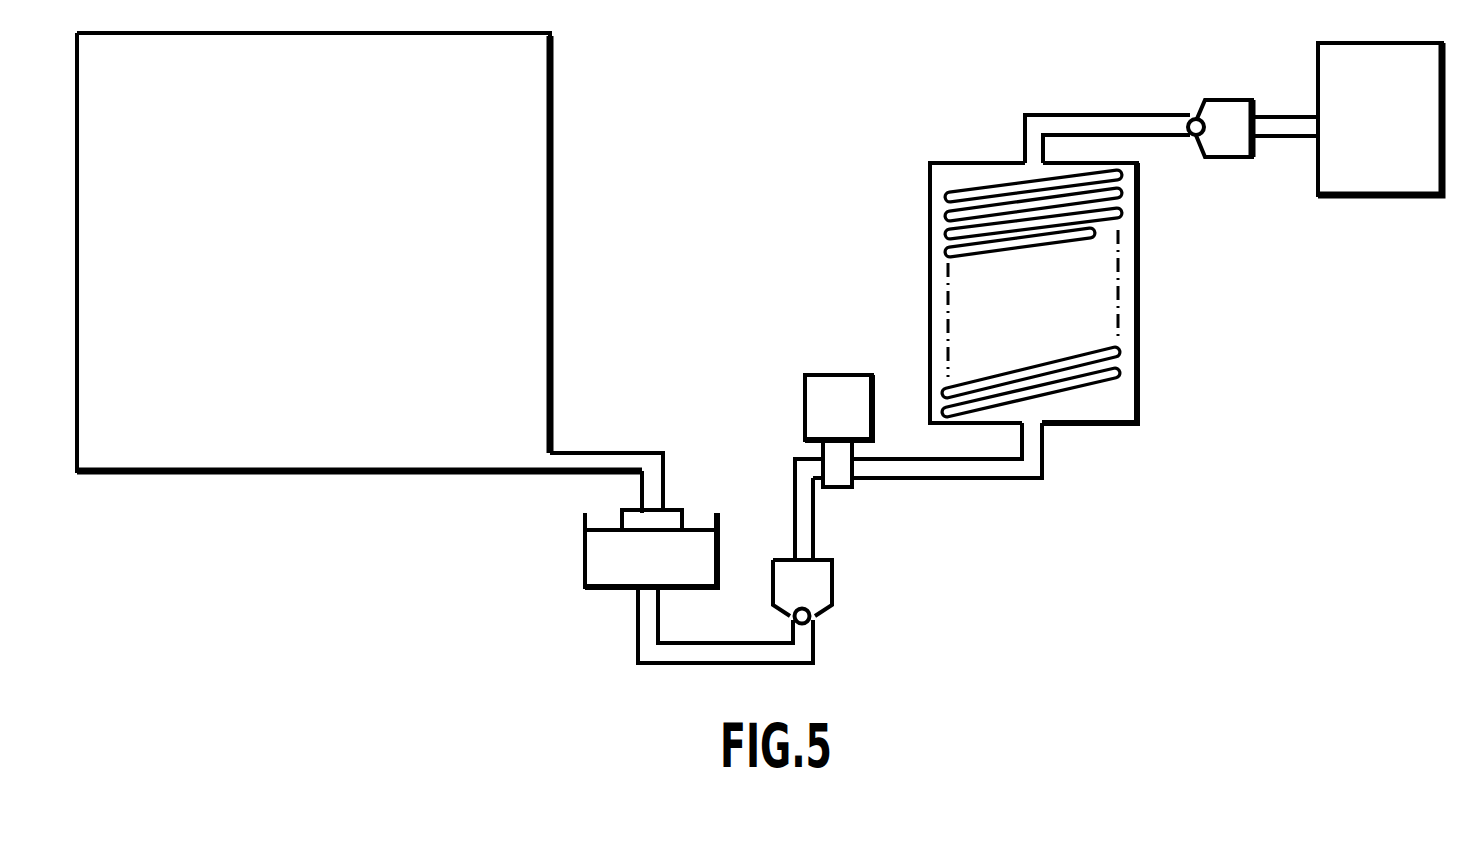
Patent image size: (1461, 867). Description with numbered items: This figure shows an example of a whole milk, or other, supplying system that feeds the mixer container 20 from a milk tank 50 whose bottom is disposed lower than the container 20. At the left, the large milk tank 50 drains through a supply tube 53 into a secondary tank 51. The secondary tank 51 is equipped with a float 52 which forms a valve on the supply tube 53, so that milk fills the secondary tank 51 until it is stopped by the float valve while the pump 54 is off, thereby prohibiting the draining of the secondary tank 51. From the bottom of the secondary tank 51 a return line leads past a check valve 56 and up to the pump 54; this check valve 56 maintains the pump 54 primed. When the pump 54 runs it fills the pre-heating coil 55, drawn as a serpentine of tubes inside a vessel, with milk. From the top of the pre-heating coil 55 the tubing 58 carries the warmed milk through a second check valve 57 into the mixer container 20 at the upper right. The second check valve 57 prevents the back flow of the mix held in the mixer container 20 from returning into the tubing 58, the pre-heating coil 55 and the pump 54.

The mixer container 20 is at (1380, 182).
The milk tank 50 is at (552, 89).
The secondary tank 51 is at (585, 513).
The float 52 is at (673, 517).
The supply tube 53 is at (655, 485).
The pump 54 is at (838, 377).
The pre-heating coil 55 is at (948, 197).
The check valve 56 is at (813, 602).
The second check valve 57 is at (1230, 145).
The tubing 58 is at (1130, 125).